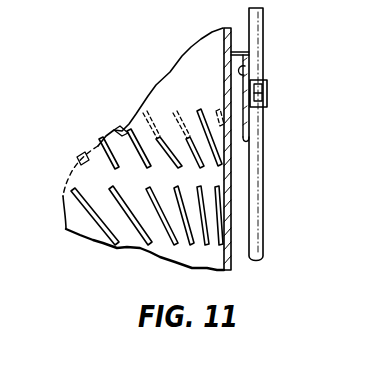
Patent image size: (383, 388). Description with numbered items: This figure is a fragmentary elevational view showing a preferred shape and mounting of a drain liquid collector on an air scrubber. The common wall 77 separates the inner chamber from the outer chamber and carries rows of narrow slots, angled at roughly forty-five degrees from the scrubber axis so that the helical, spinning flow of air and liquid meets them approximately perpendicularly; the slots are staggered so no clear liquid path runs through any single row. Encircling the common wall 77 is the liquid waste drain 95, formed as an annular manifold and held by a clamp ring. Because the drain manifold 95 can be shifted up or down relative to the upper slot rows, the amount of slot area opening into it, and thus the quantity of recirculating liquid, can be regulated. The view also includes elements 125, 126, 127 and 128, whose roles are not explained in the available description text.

The common wall 77 is at (231, 33).
The liquid waste drain 95 is at (246, 68).
The hook portion 125 is at (250, 140).
The perforated drum 126 is at (122, 131).
The latch block 127 is at (267, 93).
The rod 128 is at (257, 158).